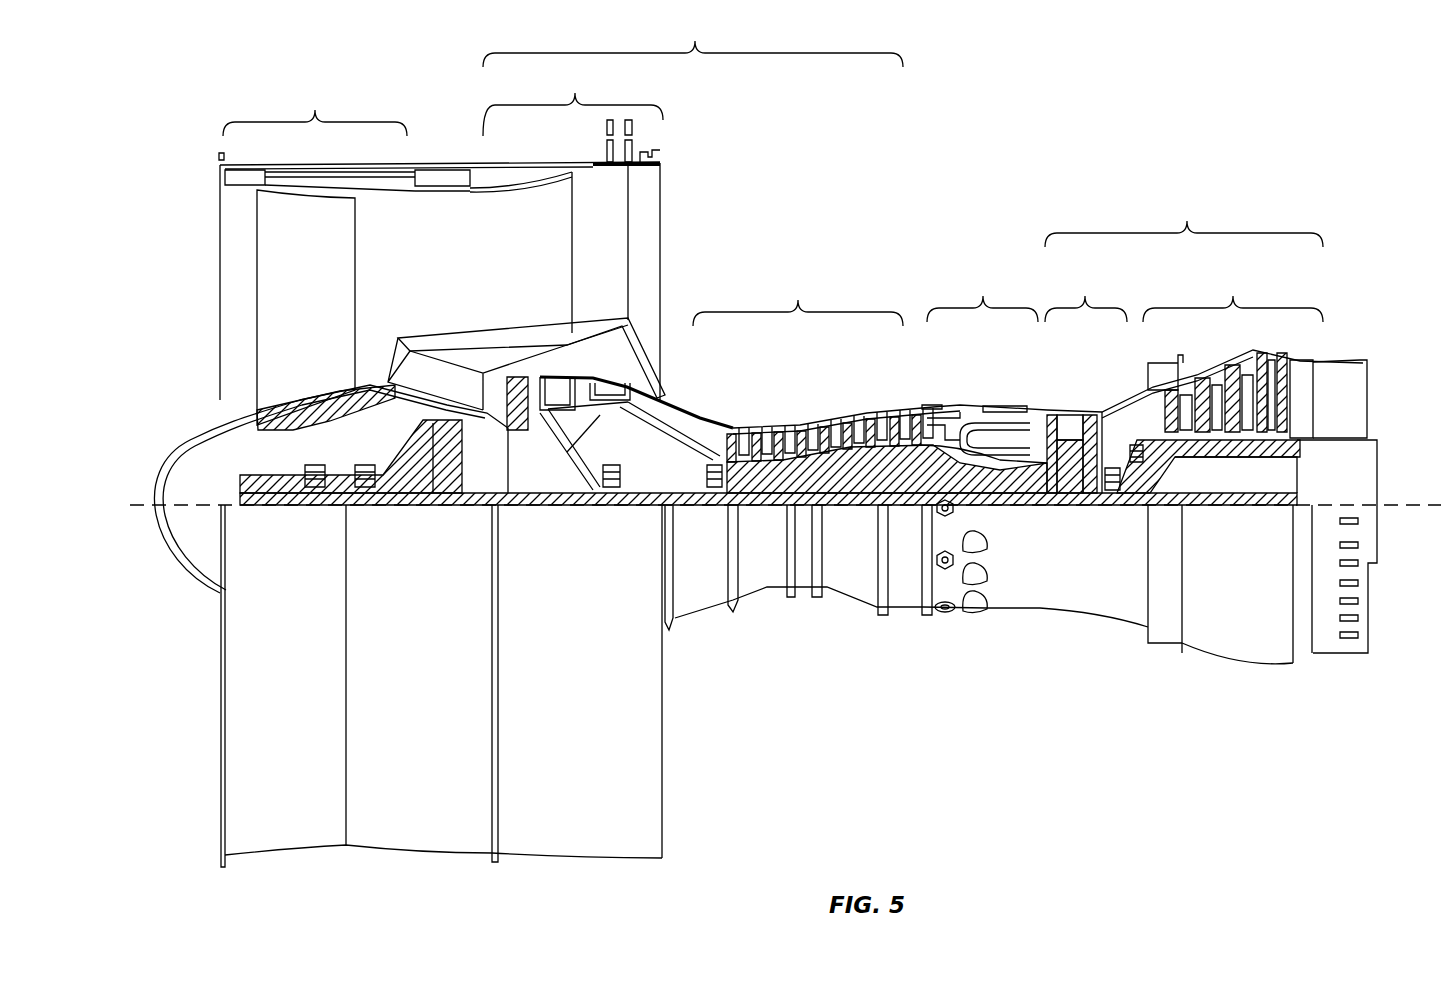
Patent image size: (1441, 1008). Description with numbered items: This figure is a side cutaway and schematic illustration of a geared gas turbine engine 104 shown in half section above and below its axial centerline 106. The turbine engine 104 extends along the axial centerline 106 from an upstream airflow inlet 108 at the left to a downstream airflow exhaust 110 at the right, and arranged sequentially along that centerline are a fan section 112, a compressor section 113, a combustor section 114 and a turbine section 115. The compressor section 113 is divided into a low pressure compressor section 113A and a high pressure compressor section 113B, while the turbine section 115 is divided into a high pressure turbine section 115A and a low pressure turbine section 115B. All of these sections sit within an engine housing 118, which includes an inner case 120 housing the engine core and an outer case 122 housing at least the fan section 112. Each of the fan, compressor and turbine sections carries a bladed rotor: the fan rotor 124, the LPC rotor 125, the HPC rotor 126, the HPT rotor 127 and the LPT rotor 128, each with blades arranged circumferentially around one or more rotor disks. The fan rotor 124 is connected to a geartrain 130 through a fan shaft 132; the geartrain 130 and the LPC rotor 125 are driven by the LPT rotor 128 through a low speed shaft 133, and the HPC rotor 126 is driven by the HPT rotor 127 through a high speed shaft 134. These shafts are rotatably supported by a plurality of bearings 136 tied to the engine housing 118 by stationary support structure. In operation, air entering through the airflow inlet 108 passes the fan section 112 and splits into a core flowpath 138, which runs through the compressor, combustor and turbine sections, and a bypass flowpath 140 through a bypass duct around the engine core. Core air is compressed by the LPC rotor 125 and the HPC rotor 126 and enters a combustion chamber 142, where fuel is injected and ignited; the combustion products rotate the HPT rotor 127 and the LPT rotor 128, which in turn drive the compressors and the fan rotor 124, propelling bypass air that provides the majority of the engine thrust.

The gas turbine engine 104 is at (172, 200).
The axial centerline 106 is at (1433, 507).
The upstream airflow inlet 108 is at (220, 267).
The downstream airflow exhaust 110 is at (1368, 392).
The fan section 112 is at (315, 106).
The compressor section 113 is at (693, 40).
The low pressure compressor (LPC) section 113A is at (608, 277).
The high pressure compressor (HPC) section 113B is at (870, 366).
The combustor section 114 is at (1012, 381).
The turbine section 115 is at (1184, 217).
The high pressure turbine (HPT) section 115A is at (1204, 350).
The low pressure turbine (LPT) section 115B is at (1233, 350).
The engine housing 118 is at (692, 633).
The inner case 120 is at (902, 608).
The outer case 122 is at (614, 860).
The fan rotor 124 is at (257, 427).
The LPC rotor 125 is at (547, 505).
The HPC rotor 126 is at (843, 463).
The HPT rotor 127 is at (1070, 477).
The LPT rotor 128 is at (1227, 443).
The geartrain 130 is at (446, 505).
The fan shaft 132 is at (293, 505).
The low speed shaft 133 is at (1242, 503).
The high speed shaft 134 is at (1005, 483).
The bearings 136 is at (360, 472).
The core flowpath 138 is at (685, 422).
The bypass flowpath 140 is at (432, 254).
The combustion chamber 142 is at (988, 430).